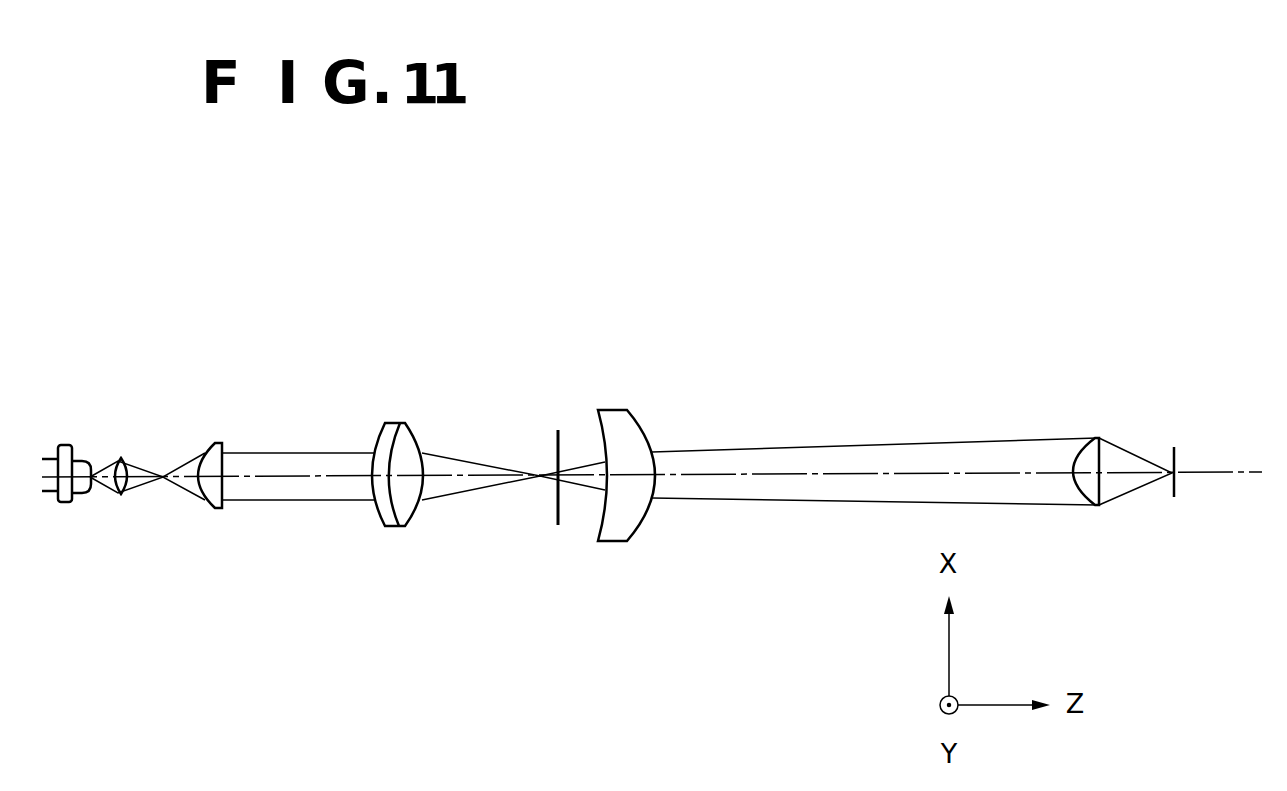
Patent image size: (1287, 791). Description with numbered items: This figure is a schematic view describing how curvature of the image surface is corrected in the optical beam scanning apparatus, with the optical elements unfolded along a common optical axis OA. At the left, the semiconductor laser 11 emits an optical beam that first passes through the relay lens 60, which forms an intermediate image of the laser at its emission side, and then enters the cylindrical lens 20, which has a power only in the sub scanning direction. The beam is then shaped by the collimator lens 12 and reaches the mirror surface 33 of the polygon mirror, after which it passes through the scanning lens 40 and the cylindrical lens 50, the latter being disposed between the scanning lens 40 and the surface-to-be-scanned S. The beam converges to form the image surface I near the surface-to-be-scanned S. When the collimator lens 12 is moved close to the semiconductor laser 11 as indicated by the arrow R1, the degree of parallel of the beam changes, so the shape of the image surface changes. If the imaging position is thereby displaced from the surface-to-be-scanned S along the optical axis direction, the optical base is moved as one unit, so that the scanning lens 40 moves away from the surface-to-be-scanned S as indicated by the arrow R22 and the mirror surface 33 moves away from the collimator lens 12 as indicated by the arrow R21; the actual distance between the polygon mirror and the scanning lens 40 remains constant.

The semiconductor laser 11 is at (76, 503).
The relay lens 60 is at (122, 495).
The cylindrical lens 20 is at (214, 507).
The collimator lens 12 is at (402, 423).
The mirror surface 33 is at (556, 437).
The scanning lens 40 is at (622, 427).
The cylindrical lens 50 is at (1092, 492).
The image surface I is at (1172, 463).
The surface-to-be-scanned S is at (1170, 490).
The optical axis OA is at (847, 473).
The arrow R1 is at (405, 562).
The arrow R21 is at (568, 562).
The arrow R22 is at (588, 562).